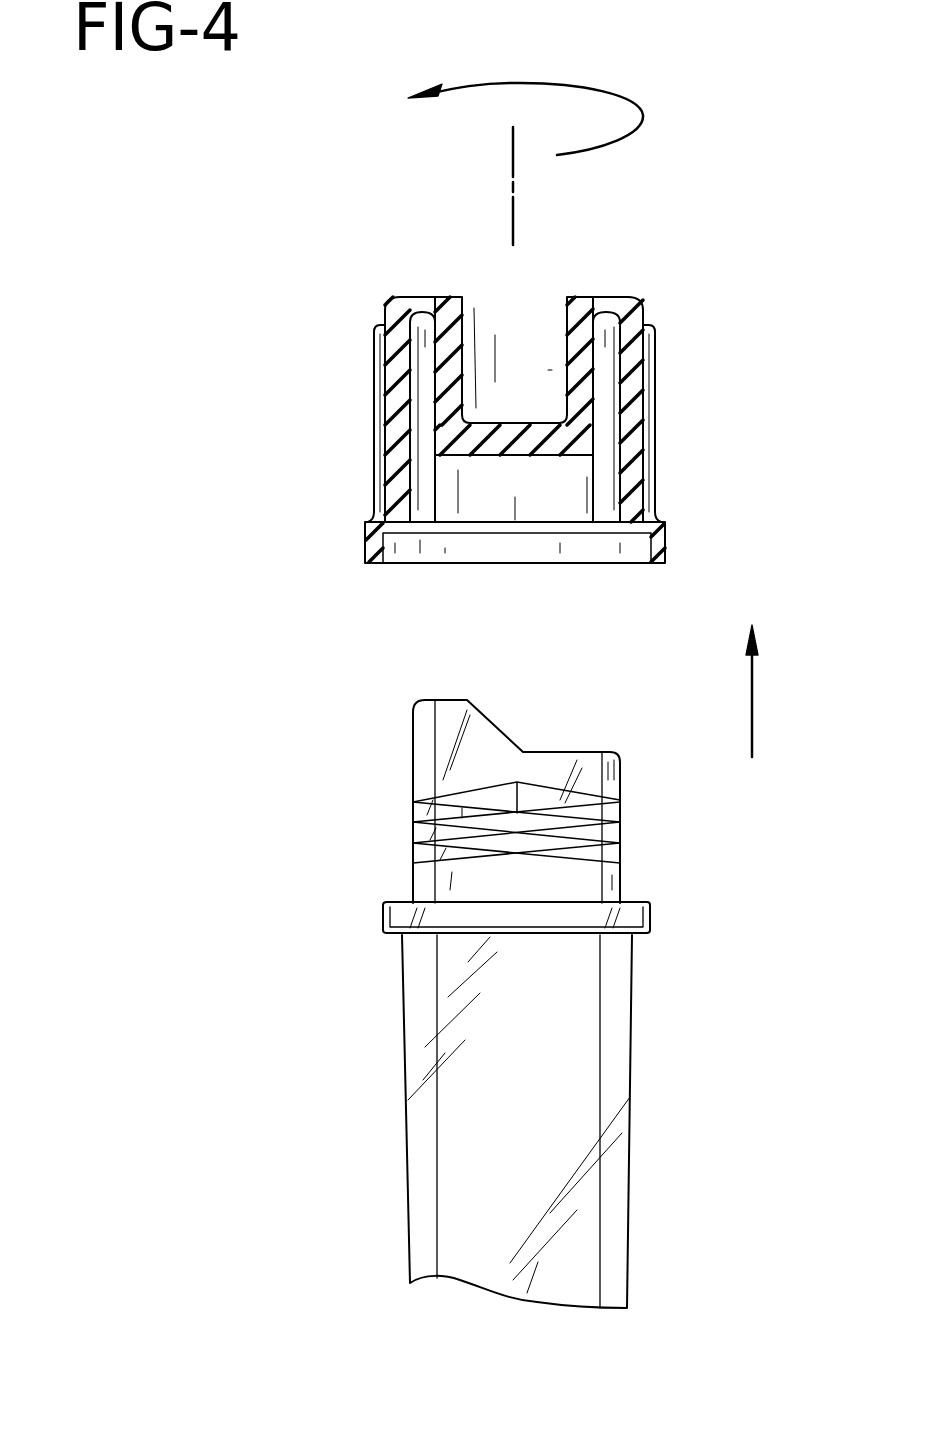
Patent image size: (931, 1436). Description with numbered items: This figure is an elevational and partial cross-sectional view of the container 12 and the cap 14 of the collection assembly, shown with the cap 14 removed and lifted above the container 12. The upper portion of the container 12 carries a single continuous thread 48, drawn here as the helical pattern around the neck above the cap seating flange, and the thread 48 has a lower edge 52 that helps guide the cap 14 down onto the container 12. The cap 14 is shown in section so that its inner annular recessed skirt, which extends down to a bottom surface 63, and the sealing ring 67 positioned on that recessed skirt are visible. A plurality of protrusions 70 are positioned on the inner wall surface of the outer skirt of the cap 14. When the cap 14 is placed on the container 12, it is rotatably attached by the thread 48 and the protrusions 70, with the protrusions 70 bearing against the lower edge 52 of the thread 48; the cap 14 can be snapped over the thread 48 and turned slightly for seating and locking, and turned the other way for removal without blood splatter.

The cap 14 is at (643, 317).
The sealing ring 67 is at (617, 440).
The bottom surface 63 is at (515, 457).
The protrusions 70 is at (407, 457).
The thread 48 is at (620, 810).
The lower edge 52 is at (413, 860).
The container 12 is at (628, 1082).